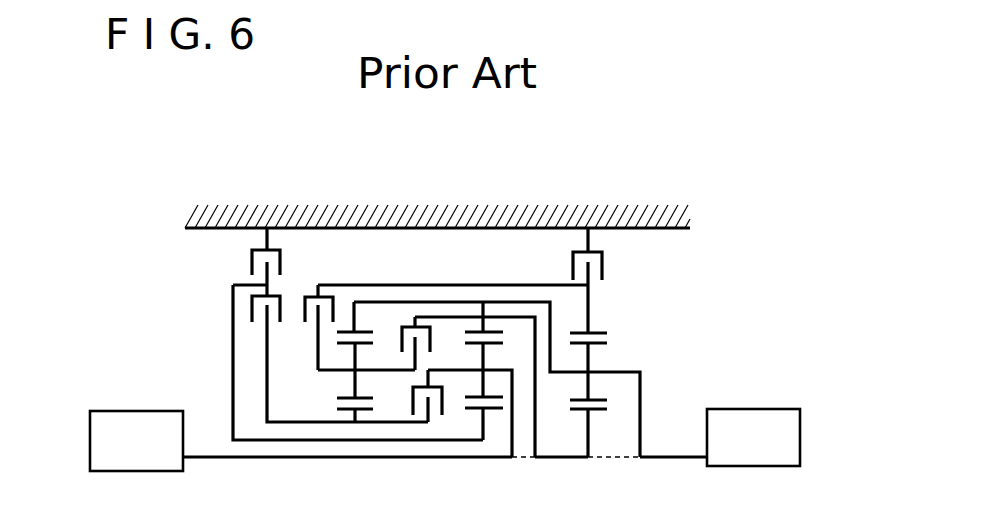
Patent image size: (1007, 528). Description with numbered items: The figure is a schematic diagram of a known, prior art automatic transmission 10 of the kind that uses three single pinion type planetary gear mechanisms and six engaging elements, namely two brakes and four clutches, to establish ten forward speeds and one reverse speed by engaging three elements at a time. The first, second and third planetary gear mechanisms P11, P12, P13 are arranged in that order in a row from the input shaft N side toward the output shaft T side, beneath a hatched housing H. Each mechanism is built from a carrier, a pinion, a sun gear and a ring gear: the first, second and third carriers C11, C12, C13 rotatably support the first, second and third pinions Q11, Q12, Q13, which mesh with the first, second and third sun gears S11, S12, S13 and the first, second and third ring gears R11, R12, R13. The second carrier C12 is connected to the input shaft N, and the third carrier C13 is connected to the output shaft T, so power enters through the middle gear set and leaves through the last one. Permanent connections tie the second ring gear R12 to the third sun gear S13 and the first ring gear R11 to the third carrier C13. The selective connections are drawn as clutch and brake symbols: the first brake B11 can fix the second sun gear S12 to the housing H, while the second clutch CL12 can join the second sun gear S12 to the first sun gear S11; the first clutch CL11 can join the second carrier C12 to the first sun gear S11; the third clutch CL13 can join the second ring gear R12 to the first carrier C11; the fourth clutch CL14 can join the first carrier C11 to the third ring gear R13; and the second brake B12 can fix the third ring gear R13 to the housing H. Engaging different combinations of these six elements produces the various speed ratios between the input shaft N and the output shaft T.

The automatic transmission (prior art) 10 is at (532, 179).
The housing H is at (423, 218).
The first brake B11 is at (248, 262).
The second brake B12 is at (606, 264).
The first clutch CL11 is at (438, 443).
The second clutch CL12 is at (247, 306).
The third clutch CL13 is at (411, 317).
The fourth clutch CL14 is at (323, 280).
The first planetary gear mechanism P11 is at (383, 396).
The second planetary gear mechanism P12 is at (497, 421).
The third planetary gear mechanism P13 is at (572, 421).
The first ring gear R11 is at (356, 322).
The second ring gear R12 is at (488, 326).
The third ring gear R13 is at (590, 326).
The first pinion Q11 is at (356, 352).
The second pinion Q12 is at (486, 352).
The third pinion Q13 is at (591, 352).
The first carrier C11 is at (337, 372).
The second carrier C12 is at (481, 371).
The third carrier C13 is at (597, 382).
The first sun gear S11 is at (346, 412).
The second sun gear S12 is at (434, 426).
The third sun gear S13 is at (607, 420).
The input shaft N is at (148, 472).
The output shaft T is at (745, 467).